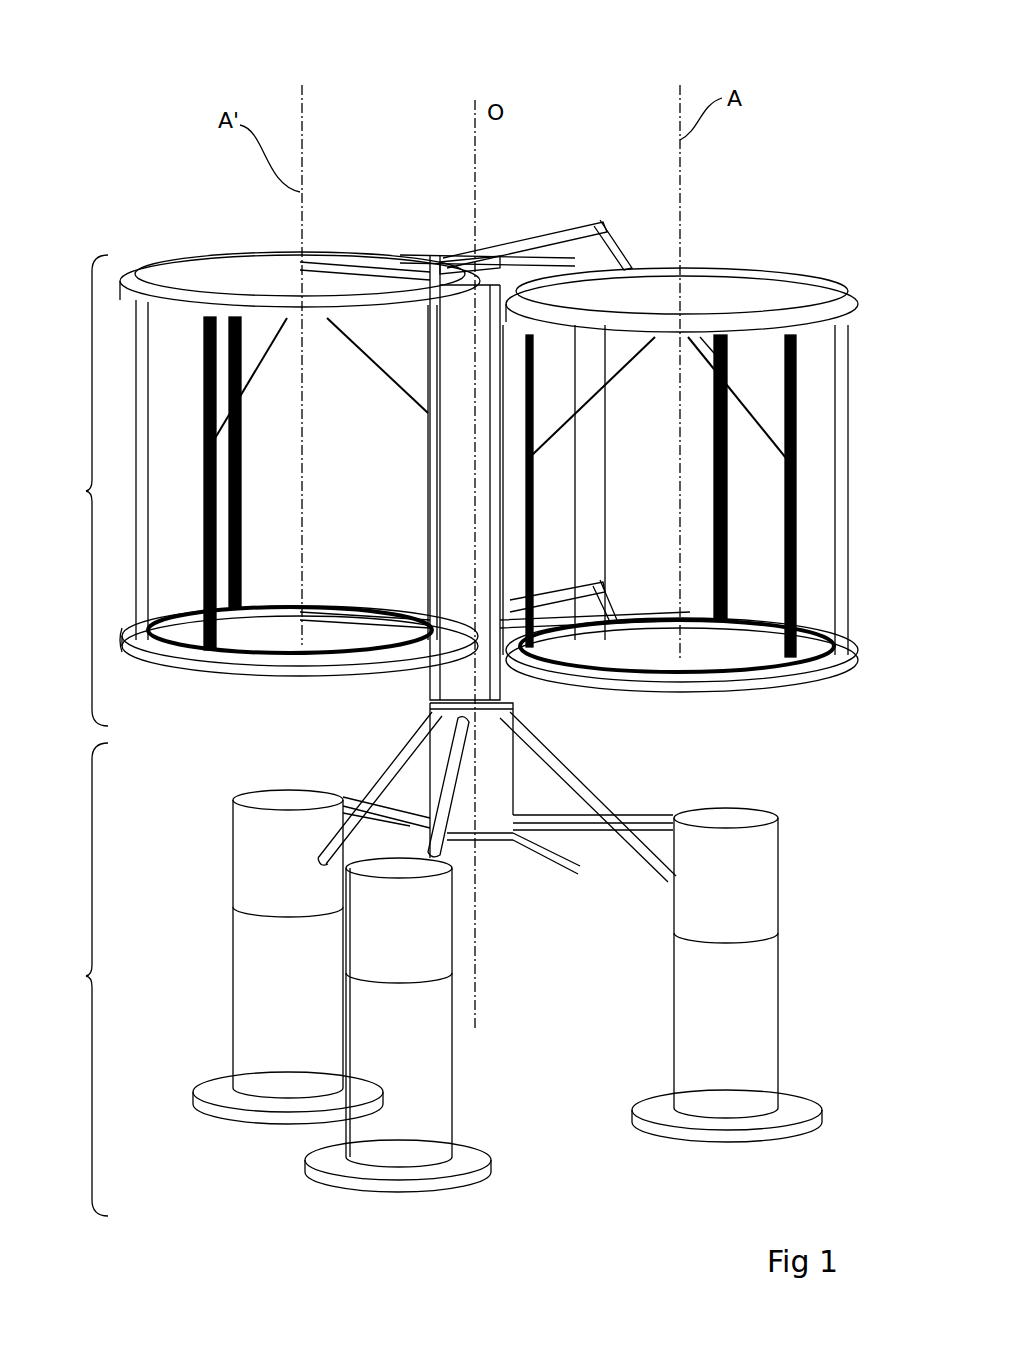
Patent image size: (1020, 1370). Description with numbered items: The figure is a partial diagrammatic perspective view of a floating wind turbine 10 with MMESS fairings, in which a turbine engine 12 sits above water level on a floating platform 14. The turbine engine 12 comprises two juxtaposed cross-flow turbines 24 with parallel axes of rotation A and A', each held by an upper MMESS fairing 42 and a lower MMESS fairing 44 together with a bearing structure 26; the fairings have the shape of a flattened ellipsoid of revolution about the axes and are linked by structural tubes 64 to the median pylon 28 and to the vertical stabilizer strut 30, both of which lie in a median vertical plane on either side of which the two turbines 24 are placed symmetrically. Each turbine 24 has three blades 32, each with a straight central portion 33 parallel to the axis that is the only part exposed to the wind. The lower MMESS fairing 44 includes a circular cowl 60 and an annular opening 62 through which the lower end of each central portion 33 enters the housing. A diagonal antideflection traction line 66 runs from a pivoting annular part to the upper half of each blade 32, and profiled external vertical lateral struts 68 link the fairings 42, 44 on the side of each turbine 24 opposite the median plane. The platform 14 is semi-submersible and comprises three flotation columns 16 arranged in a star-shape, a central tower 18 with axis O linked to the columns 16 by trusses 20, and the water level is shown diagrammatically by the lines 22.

The floating wind turbine 10 is at (793, 65).
The turbine engine 12 is at (459, 457).
The floating platform 14 is at (454, 959).
The flotation columns 16 is at (505, 991).
The central tower 18 is at (488, 728).
The trusses 20 is at (395, 795).
The water level lines 22 is at (240, 908).
The cross-flow turbines 24 is at (300, 452).
The bearing structure 26 is at (498, 240).
The median pylon 28 is at (433, 688).
The vertical stabilizer strut 30 is at (625, 488).
The blades 32 is at (203, 470).
The central portion 33 is at (242, 465).
The upper MMESS fairing 42 is at (205, 262).
The lower MMESS fairing 44 is at (238, 660).
The circular cowl 60 is at (280, 640).
The annular opening 62 is at (150, 660).
The structural tubes 64 is at (430, 265).
The diagonal antideflection traction line 66 is at (258, 370).
The external vertical lateral struts 68 is at (148, 545).